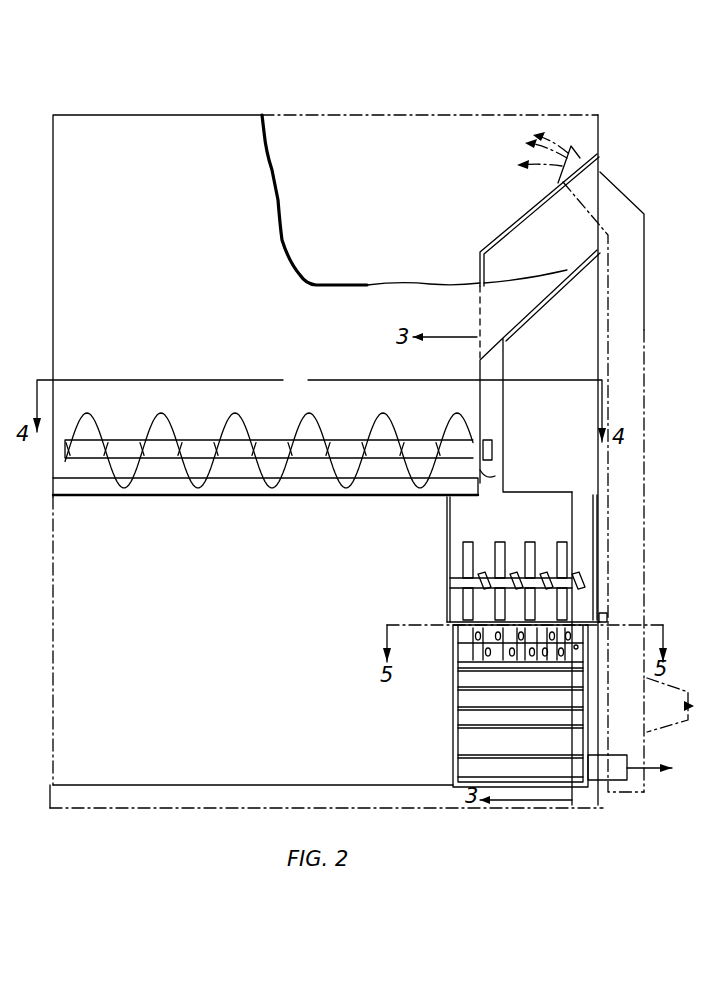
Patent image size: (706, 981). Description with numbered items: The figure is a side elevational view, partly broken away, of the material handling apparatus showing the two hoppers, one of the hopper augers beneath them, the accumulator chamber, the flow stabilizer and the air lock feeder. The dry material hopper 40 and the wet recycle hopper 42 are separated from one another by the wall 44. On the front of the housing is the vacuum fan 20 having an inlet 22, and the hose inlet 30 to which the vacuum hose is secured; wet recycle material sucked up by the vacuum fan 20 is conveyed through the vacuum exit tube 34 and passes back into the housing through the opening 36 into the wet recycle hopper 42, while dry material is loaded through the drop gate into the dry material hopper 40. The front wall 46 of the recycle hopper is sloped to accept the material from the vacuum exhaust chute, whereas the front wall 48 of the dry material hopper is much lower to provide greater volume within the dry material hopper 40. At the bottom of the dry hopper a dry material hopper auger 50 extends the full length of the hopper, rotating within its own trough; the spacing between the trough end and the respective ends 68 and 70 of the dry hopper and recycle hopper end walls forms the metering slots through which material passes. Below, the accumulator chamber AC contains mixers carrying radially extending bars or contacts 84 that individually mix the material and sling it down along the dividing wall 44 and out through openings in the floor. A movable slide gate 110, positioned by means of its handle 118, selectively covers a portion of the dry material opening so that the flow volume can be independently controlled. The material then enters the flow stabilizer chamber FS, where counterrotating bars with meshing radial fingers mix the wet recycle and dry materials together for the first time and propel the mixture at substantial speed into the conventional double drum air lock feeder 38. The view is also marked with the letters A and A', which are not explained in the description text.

The vacuum fan 20 is at (637, 785).
The inlet 22 is at (640, 708).
The hose inlet 30 is at (662, 734).
The vacuum exit tube 34 is at (646, 330).
The housing opening 36 is at (604, 168).
The double drum air lock feeder 38 is at (453, 723).
The dry material hopper 40 is at (154, 158).
The wet recycle hopper 42 is at (325, 145).
The wall 44 is at (240, 313).
The front wall of the recycle hopper 46 is at (518, 209).
The front wall of the dry material hopper 48 is at (530, 311).
The dry material hopper auger 50 is at (315, 418).
The dry hopper end wall end 68 is at (477, 423).
The recycle hopper end wall end 70 is at (479, 273).
The radially extending bars 84 is at (528, 546).
The slide gate 110 is at (505, 610).
The handle 118 is at (605, 614).
The accumulator chamber AC is at (448, 545).
The flow stabilizer chamber FS is at (453, 650).
The auger axis end A' is at (504, 464).
The axis A is at (699, 565).